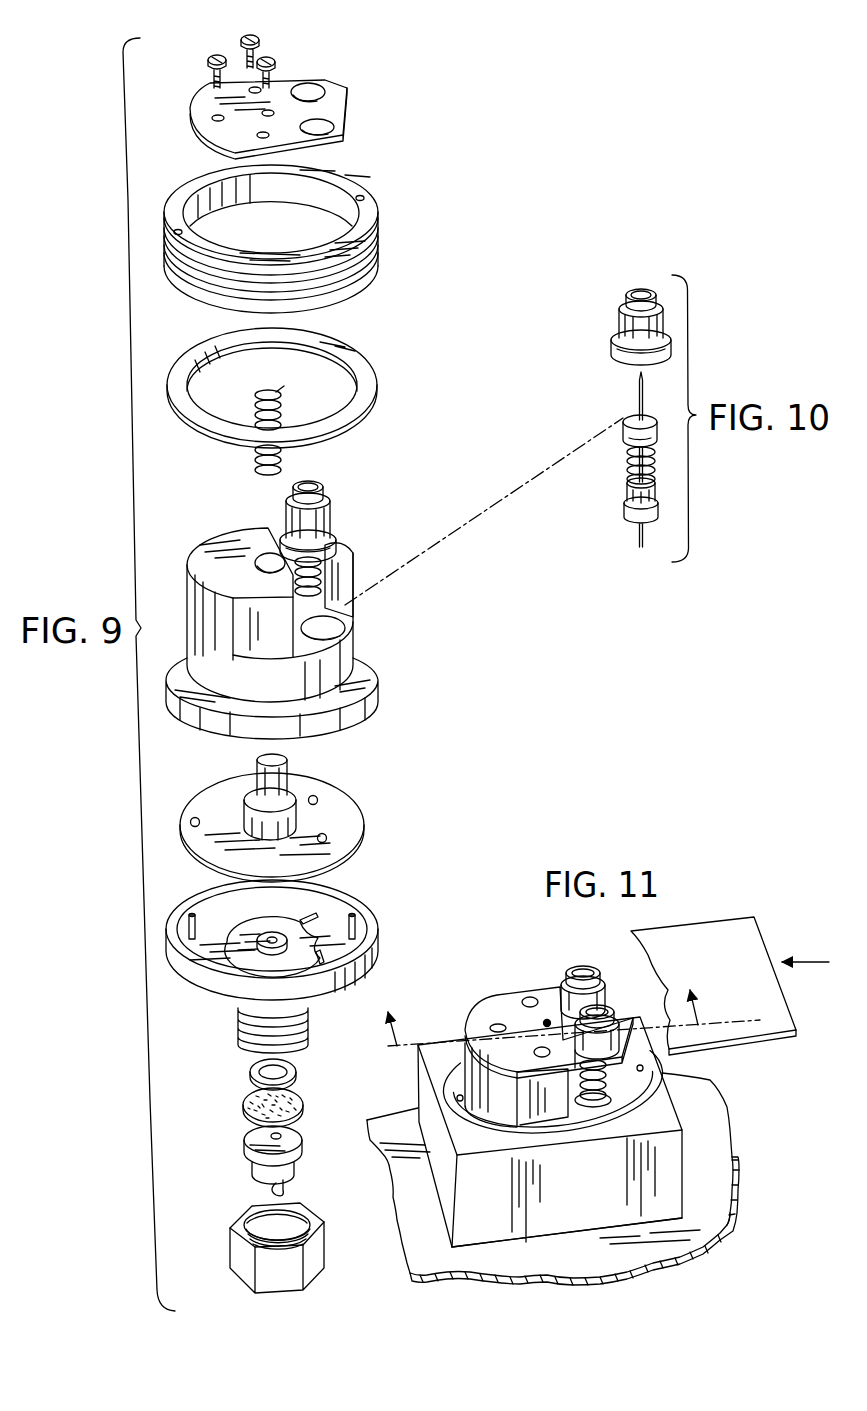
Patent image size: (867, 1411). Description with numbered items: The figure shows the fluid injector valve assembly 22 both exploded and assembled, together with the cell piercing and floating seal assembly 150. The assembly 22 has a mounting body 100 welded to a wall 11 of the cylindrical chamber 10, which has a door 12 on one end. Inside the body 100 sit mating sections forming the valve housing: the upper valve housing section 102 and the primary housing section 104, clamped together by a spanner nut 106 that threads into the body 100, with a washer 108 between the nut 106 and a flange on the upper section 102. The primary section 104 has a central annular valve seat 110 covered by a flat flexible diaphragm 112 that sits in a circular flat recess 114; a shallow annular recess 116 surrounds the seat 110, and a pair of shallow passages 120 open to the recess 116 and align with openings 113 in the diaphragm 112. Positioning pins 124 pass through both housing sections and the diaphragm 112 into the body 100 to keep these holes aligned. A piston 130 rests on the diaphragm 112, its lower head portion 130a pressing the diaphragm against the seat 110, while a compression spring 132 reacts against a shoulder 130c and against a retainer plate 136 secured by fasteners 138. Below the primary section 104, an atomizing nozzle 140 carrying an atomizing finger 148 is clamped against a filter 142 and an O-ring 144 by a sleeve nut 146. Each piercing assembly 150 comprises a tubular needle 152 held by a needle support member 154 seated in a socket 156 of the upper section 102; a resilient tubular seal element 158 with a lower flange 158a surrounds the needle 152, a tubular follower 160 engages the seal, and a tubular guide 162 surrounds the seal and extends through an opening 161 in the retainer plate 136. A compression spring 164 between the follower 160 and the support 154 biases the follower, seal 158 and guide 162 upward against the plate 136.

In FIG. 9, the fasteners 138 is at (255, 46).
In FIG. 9, the opening 161 is at (322, 90).
In FIG. 9, the retainer plate 136 is at (341, 101).
In FIG. 9, the spanner nut 106 is at (378, 250).
In FIG. 9, the washer 108 is at (372, 389).
In FIG. 9, the compression spring 132 is at (255, 465).
In FIG. 9, the resilient tubular seal element 158 is at (326, 491).
In FIG. 10, the resilient tubular seal element 158 is at (628, 298).
In FIG. 9, the cell piercing and floating seal assembly 150 is at (350, 514).
In FIG. 10, the cell piercing and floating seal assembly 150 is at (600, 331).
In FIG. 11, the cell piercing and floating seal assembly 150 is at (570, 1023).
In FIG. 9, the tubular sleeve or guide 162 is at (289, 529).
In FIG. 10, the tubular sleeve or guide 162 is at (620, 322).
In FIG. 9, the upper valve housing section 102 is at (192, 624).
In FIG. 9, the socket 156 is at (345, 629).
In FIG. 9, the piston 130 is at (248, 791).
In FIG. 9, the shoulder 130c is at (285, 791).
In FIG. 9, the openings 113 is at (318, 801).
In FIG. 9, the flexible diaphragm 112 is at (353, 810).
In FIG. 9, the lower head portion 130a is at (246, 825).
In FIG. 9, the circular flat recess 114 is at (200, 911).
In FIG. 9, the positioning pins 124 is at (193, 919).
In FIG. 9, the annular valve seat 110 is at (273, 934).
In FIG. 9, the shallow passages 120 is at (320, 913).
In FIG. 9, the primary housing section 104 is at (380, 951).
In FIG. 9, the shallow annular recess 116 is at (246, 953).
In FIG. 9, the O-ring 144 is at (298, 1074).
In FIG. 9, the filter 142 is at (248, 1106).
In FIG. 9, the atomizing nozzle 140 is at (249, 1161).
In FIG. 9, the atomizing finger 148 is at (293, 1184).
In FIG. 9, the sleeve nut 146 is at (233, 1259).
In FIG. 10, the outwardly extending flange 158a is at (625, 363).
In FIG. 10, the tubular needle 152 is at (637, 399).
In FIG. 10, the tubular follower 160 is at (622, 421).
In FIG. 10, the compression spring 164 is at (623, 463).
In FIG. 11, the compression spring 164 is at (613, 1086).
In FIG. 10, the needle support member 154 is at (636, 517).
In FIG. 11, the door 12 is at (574, 1010).
In FIG. 11, the mounting body 100 is at (678, 1182).
In FIG. 11, the fluid injector valve assembly 22 is at (550, 1230).
In FIG. 11, the cylindrical chamber 10 is at (427, 1252).
In FIG. 11, the wall 11 is at (720, 1223).